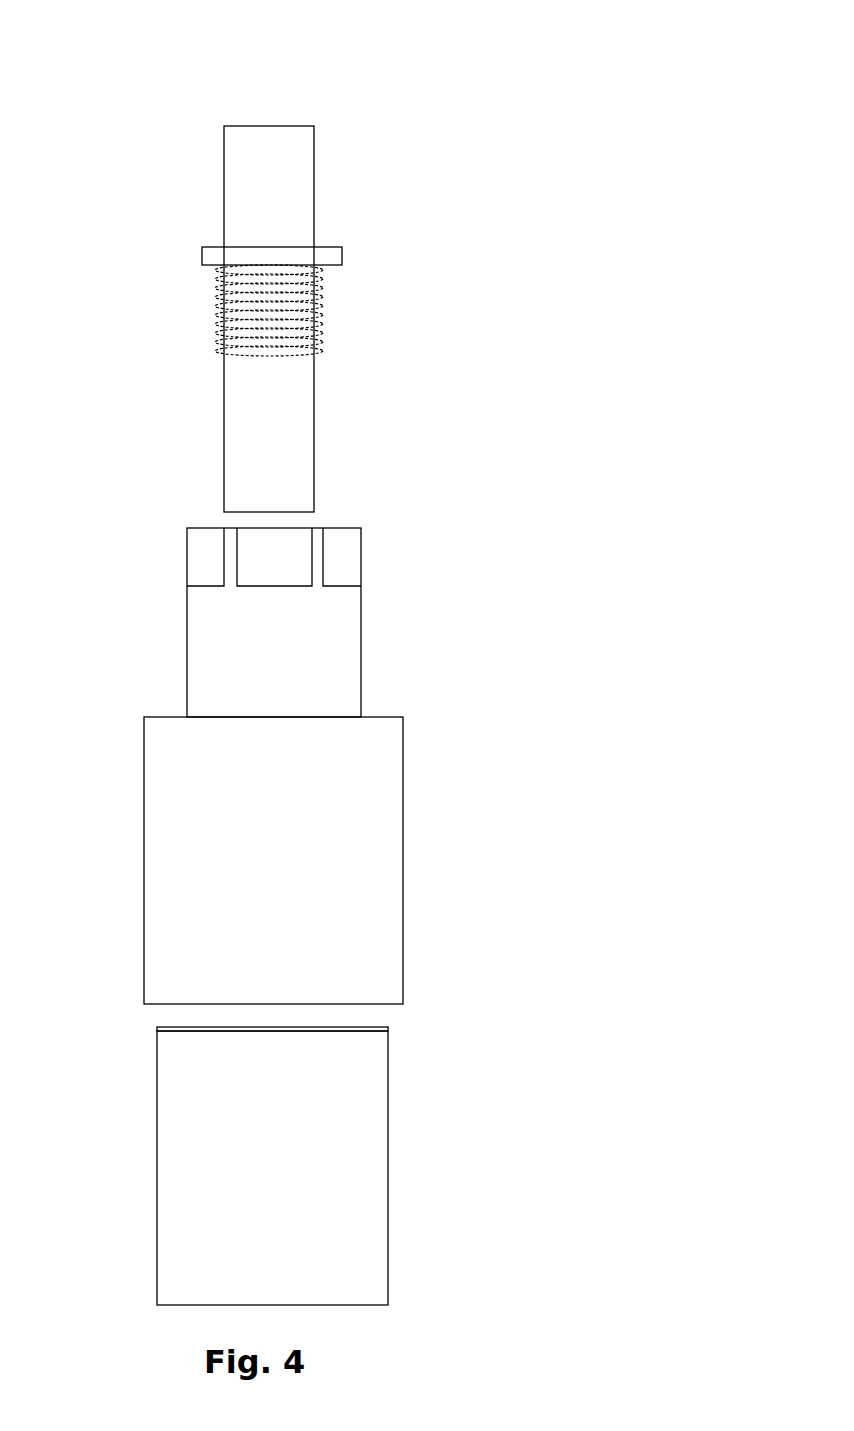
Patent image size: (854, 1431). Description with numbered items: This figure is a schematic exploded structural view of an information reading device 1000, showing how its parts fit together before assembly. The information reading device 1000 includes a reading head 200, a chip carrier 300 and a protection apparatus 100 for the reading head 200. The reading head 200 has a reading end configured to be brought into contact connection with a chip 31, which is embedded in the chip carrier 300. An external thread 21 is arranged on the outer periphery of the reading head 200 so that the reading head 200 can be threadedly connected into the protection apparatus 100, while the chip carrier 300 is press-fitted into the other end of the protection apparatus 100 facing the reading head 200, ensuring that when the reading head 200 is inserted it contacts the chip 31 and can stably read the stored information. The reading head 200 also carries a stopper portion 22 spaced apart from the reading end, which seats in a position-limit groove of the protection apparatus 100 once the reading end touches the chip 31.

The information reading device 1000 is at (104, 40).
The reading head 200 is at (305, 427).
The stopper portion 22 is at (332, 255).
The external thread 21 is at (228, 311).
The protection apparatus 100 is at (180, 785).
The chip 31 is at (372, 1027).
The chip carrier 300 is at (180, 1182).